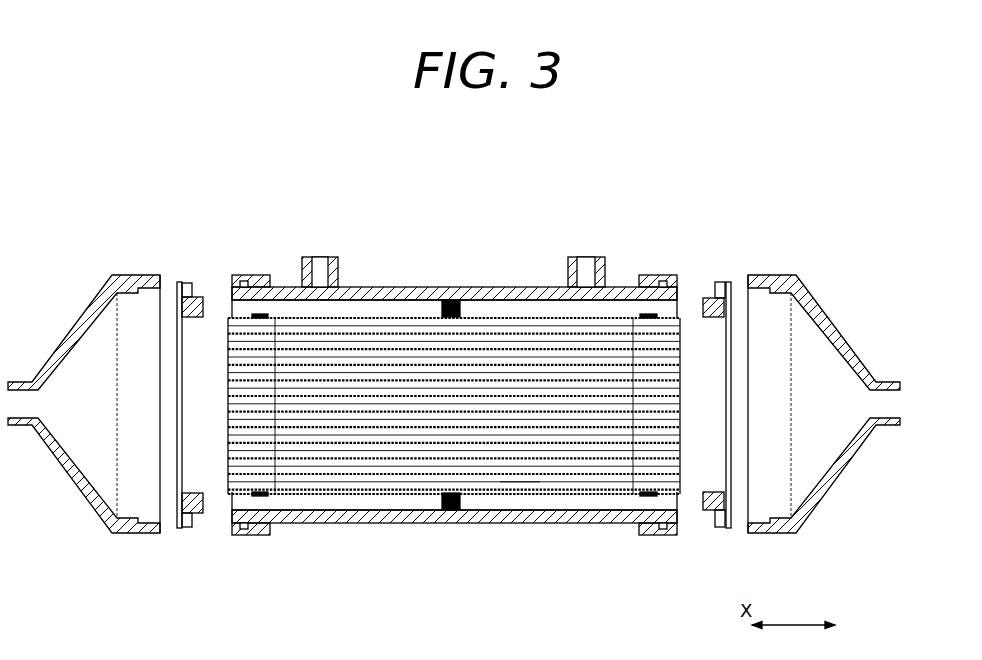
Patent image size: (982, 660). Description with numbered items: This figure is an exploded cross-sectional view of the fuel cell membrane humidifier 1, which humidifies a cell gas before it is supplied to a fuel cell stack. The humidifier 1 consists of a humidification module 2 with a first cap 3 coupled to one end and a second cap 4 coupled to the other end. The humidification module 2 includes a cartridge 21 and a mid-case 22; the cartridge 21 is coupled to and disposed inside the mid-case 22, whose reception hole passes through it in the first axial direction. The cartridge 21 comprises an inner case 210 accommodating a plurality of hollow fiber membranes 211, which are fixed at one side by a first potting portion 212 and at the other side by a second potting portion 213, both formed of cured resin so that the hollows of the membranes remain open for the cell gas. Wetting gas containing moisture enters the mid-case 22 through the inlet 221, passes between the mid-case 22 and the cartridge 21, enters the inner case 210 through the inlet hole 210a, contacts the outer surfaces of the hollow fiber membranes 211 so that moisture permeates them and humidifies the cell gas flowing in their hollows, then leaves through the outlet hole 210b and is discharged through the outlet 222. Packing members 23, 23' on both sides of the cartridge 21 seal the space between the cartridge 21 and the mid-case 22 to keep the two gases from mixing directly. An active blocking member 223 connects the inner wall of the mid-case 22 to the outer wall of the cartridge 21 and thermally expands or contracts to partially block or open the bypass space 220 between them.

The fuel cell membrane humidifier 1 is at (64, 192).
The humidification module 2 is at (698, 150).
The first cap 3 is at (62, 468).
The second cap 4 is at (842, 473).
The cartridge 21 is at (373, 310).
The mid-case 22 is at (454, 375).
The packing member 23 is at (228, 344).
The packing member 23' is at (709, 345).
The inner case 210 is at (422, 512).
The inlet hole 210a is at (283, 315).
The outlet hole 210b is at (613, 318).
The hollow fiber membranes 211 is at (519, 483).
The first potting portion 212 is at (258, 493).
The second potting portion 213 is at (653, 494).
The bypass space 220 is at (578, 503).
The inlet 221 is at (325, 256).
The outlet 222 is at (593, 257).
The active blocking member 223 is at (448, 300).